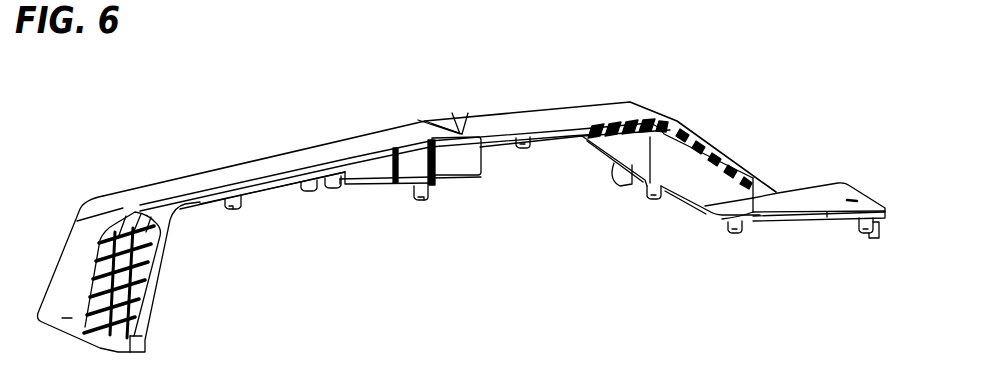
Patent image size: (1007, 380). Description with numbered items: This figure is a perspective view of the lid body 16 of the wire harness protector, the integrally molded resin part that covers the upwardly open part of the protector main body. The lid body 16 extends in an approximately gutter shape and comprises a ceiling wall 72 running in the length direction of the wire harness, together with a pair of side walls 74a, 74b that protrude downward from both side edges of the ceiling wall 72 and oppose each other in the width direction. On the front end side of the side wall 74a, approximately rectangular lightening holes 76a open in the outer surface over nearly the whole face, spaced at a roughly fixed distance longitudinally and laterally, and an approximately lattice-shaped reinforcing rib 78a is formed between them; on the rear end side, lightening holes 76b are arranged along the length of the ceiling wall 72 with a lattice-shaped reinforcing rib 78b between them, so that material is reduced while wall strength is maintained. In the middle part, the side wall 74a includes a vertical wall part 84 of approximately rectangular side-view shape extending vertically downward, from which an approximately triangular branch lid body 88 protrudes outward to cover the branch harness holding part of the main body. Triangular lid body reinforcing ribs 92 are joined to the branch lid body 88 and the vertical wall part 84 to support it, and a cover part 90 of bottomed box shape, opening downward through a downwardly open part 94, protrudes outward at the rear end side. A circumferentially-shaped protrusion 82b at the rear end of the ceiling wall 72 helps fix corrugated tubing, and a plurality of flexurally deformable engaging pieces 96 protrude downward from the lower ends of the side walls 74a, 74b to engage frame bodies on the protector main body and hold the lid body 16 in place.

The lid body 16 is at (545, 66).
The ceiling wall 72 is at (553, 114).
The side wall 74a is at (273, 182).
The side wall 74b is at (182, 180).
The lightening holes 76a is at (117, 300).
The lightening holes 76b is at (670, 133).
The reinforcing rib 78a is at (100, 327).
The reinforcing rib 78b is at (690, 138).
The circumferentially-shaped protrusion 82b is at (857, 234).
The vertical wall part 84 is at (372, 170).
The branch lid body 88 is at (412, 180).
The cover part 90 is at (460, 157).
The lid body reinforcing rib 92 is at (430, 178).
The downwardly open part 94 is at (460, 178).
The engaging pieces 96 is at (234, 208).